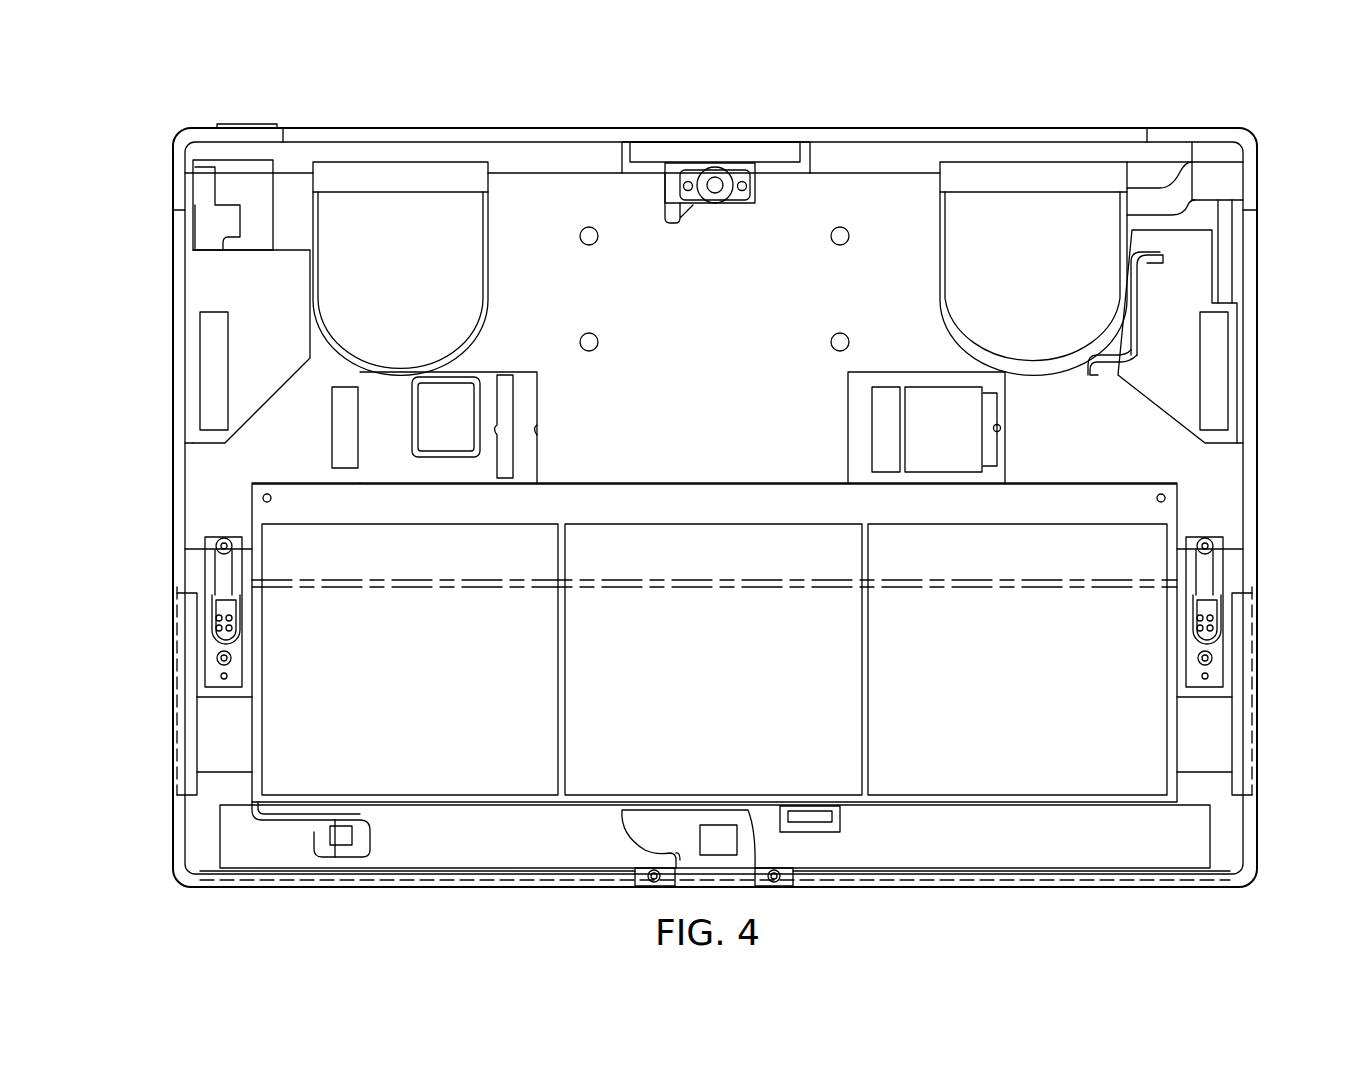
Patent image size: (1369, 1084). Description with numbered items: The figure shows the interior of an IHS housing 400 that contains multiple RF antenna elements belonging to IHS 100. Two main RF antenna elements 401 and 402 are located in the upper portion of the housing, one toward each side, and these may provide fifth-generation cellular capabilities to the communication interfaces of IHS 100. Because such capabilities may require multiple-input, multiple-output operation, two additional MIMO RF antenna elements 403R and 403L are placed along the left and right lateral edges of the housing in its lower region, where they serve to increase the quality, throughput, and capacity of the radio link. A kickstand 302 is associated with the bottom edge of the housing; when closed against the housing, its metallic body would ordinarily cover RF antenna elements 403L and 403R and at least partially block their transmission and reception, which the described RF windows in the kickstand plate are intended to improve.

The interior of IHS housing 400 is at (102, 110).
The IHS 100 is at (737, 355).
The main RF antenna element 401 is at (520, 153).
The main RF antenna element 402 is at (910, 153).
The MIMO RF antenna element 403R is at (185, 697).
The MIMO RF antenna element 403L is at (1243, 697).
The kickstand 302 is at (480, 881).